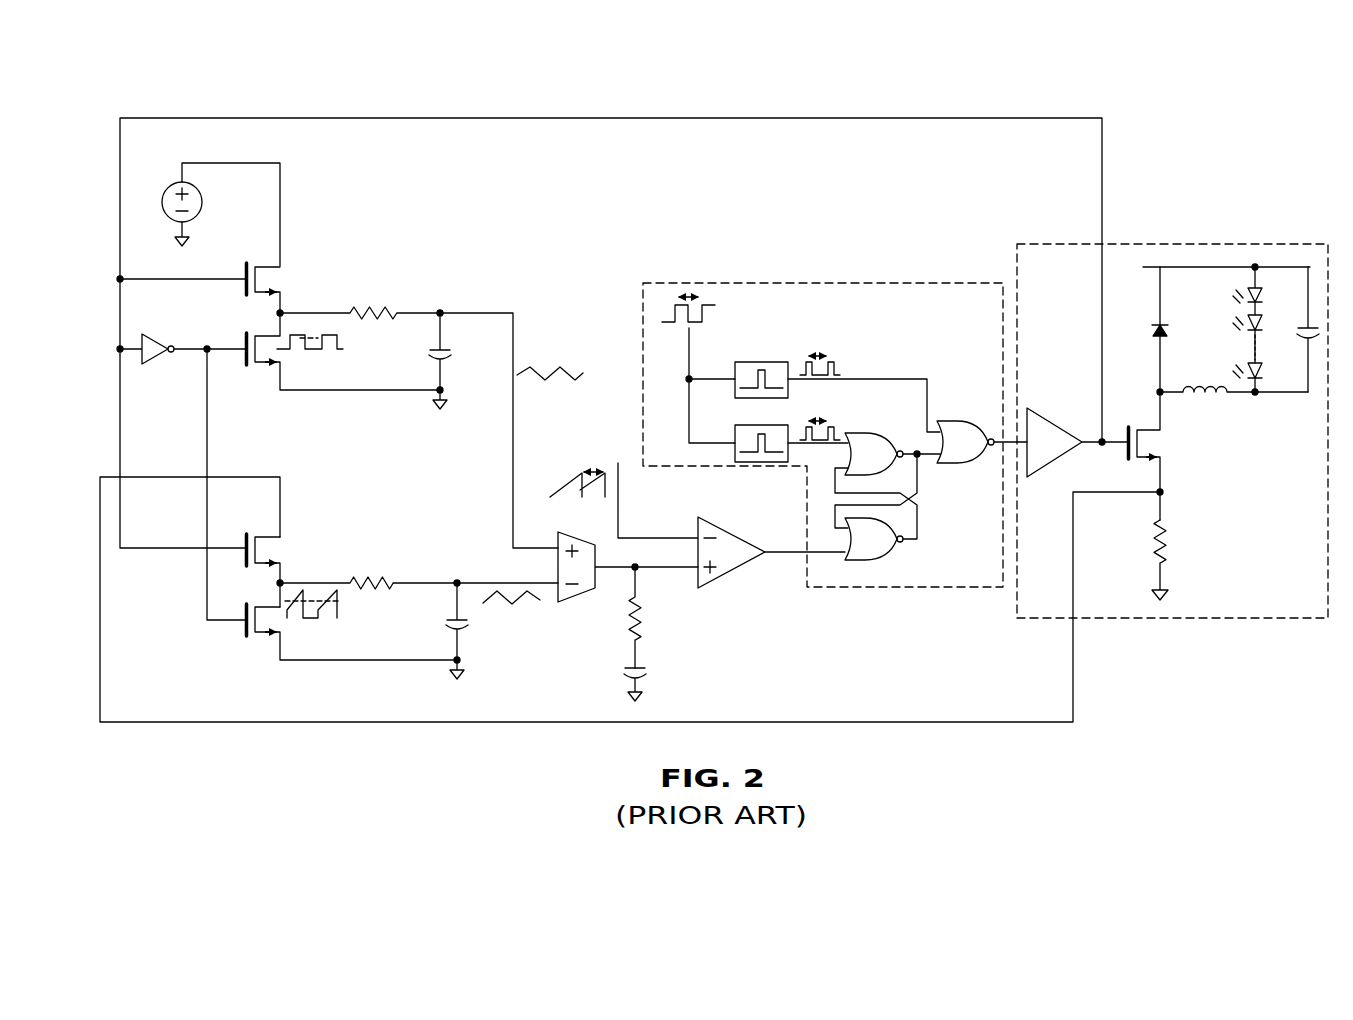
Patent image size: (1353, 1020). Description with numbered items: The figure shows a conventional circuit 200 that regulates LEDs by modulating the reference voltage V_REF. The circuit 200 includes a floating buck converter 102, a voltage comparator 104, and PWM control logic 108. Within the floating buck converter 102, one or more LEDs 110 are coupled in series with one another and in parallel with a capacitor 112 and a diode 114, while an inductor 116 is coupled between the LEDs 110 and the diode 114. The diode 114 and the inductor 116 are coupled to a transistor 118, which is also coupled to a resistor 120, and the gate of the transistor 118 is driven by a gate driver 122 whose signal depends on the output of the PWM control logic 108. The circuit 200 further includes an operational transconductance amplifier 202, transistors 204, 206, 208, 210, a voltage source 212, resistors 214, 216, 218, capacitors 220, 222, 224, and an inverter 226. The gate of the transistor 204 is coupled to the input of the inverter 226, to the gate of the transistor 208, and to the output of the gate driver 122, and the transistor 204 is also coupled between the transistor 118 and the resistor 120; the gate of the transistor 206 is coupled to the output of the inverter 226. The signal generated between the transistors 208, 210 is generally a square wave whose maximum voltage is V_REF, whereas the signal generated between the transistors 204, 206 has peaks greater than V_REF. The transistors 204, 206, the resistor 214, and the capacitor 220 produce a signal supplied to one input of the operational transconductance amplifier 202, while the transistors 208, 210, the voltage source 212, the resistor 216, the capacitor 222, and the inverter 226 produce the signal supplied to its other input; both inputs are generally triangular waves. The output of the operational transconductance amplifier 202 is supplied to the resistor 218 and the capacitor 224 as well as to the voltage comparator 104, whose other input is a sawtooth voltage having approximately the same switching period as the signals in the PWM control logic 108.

The circuit 200 is at (240, 80).
The floating buck converter 102 is at (1317, 609).
The voltage comparator 104 is at (736, 530).
The PWM control logic 108 is at (994, 316).
The LEDs 110 is at (1258, 381).
The capacitor 112 is at (1293, 330).
The diode 114 is at (1167, 330).
The inductor 116 is at (1208, 387).
The transistor 118 is at (1140, 447).
The resistor 120 is at (1168, 547).
The gate driver 122 is at (1072, 411).
The operational transconductance amplifier 202 is at (578, 598).
The transistor 204 is at (258, 552).
The transistor 206 is at (243, 628).
The transistor 208 is at (262, 283).
The transistor 210 is at (258, 367).
The voltage source 212 is at (203, 201).
The resistor 214 is at (377, 577).
The resistor 216 is at (388, 310).
The resistor 218 is at (643, 618).
The capacitor 220 is at (478, 630).
The capacitor 222 is at (458, 360).
The capacitor 224 is at (622, 688).
The inverter 226 is at (157, 365).